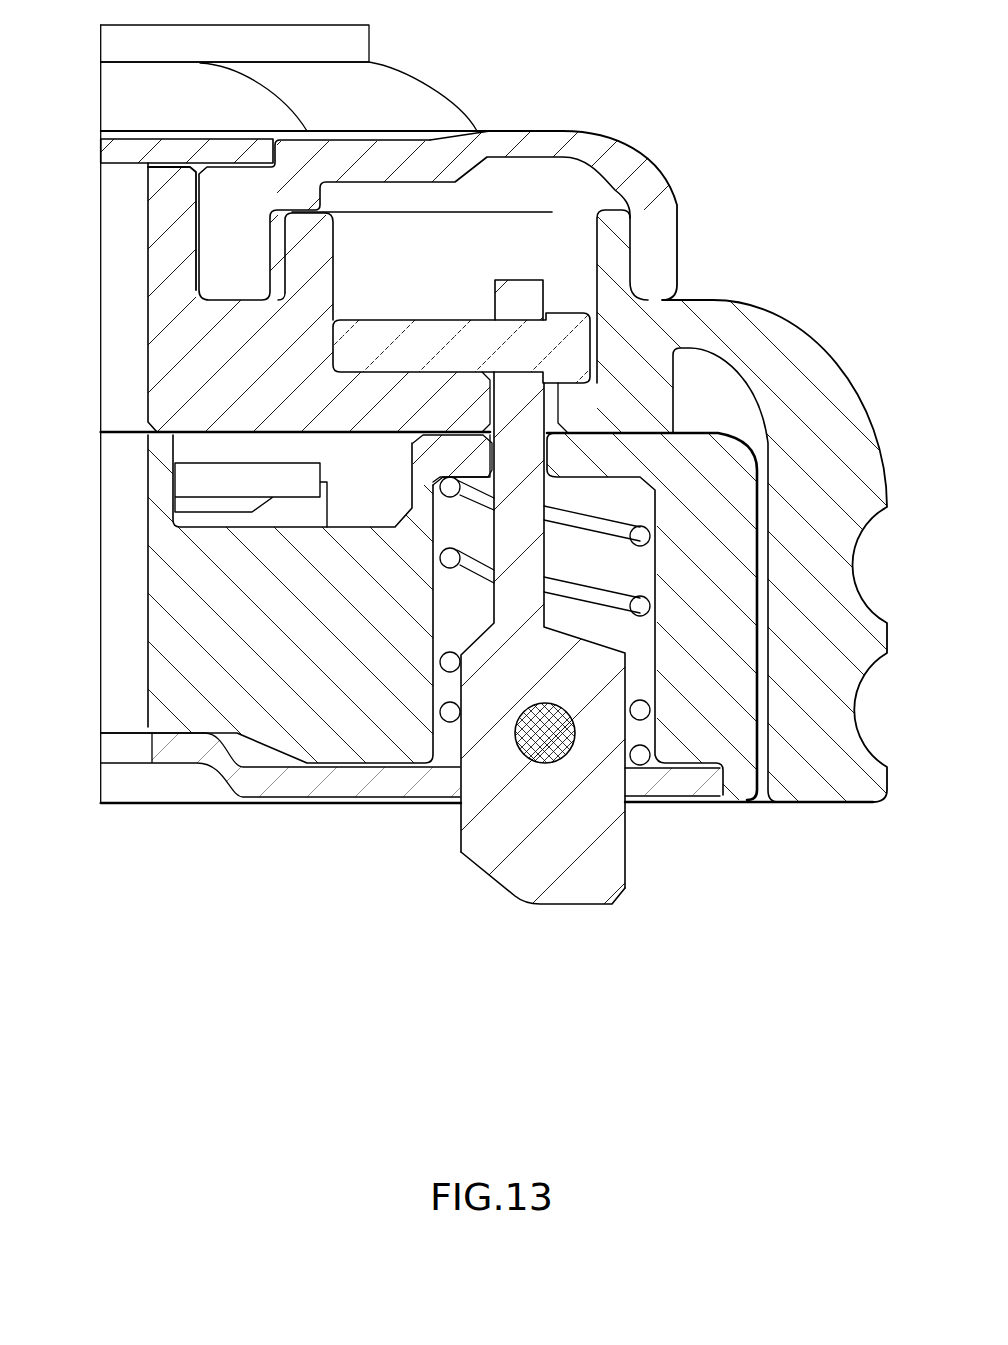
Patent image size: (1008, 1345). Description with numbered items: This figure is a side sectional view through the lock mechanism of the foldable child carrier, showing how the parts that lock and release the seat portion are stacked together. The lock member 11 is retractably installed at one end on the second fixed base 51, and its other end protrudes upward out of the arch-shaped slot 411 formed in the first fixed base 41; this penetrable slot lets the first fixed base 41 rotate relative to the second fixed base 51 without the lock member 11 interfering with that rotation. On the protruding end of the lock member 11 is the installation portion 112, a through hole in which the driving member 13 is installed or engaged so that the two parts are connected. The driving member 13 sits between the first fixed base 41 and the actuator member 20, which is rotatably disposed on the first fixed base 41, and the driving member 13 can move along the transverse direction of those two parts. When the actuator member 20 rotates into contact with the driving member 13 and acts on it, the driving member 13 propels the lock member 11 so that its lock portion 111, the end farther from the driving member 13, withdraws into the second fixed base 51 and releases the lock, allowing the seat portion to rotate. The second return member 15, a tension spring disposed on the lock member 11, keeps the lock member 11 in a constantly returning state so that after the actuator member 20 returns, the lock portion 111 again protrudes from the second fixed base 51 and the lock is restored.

The lock member 11 is at (507, 548).
The lock portion 111 is at (543, 852).
The installation portion 112 is at (514, 318).
The driving member 13 is at (549, 318).
The second return member 15 is at (643, 612).
The actuator member 20 is at (203, 365).
The first fixed base 41 is at (618, 342).
The arch-shaped slot 411 is at (372, 288).
The second fixed base 51 is at (263, 690).